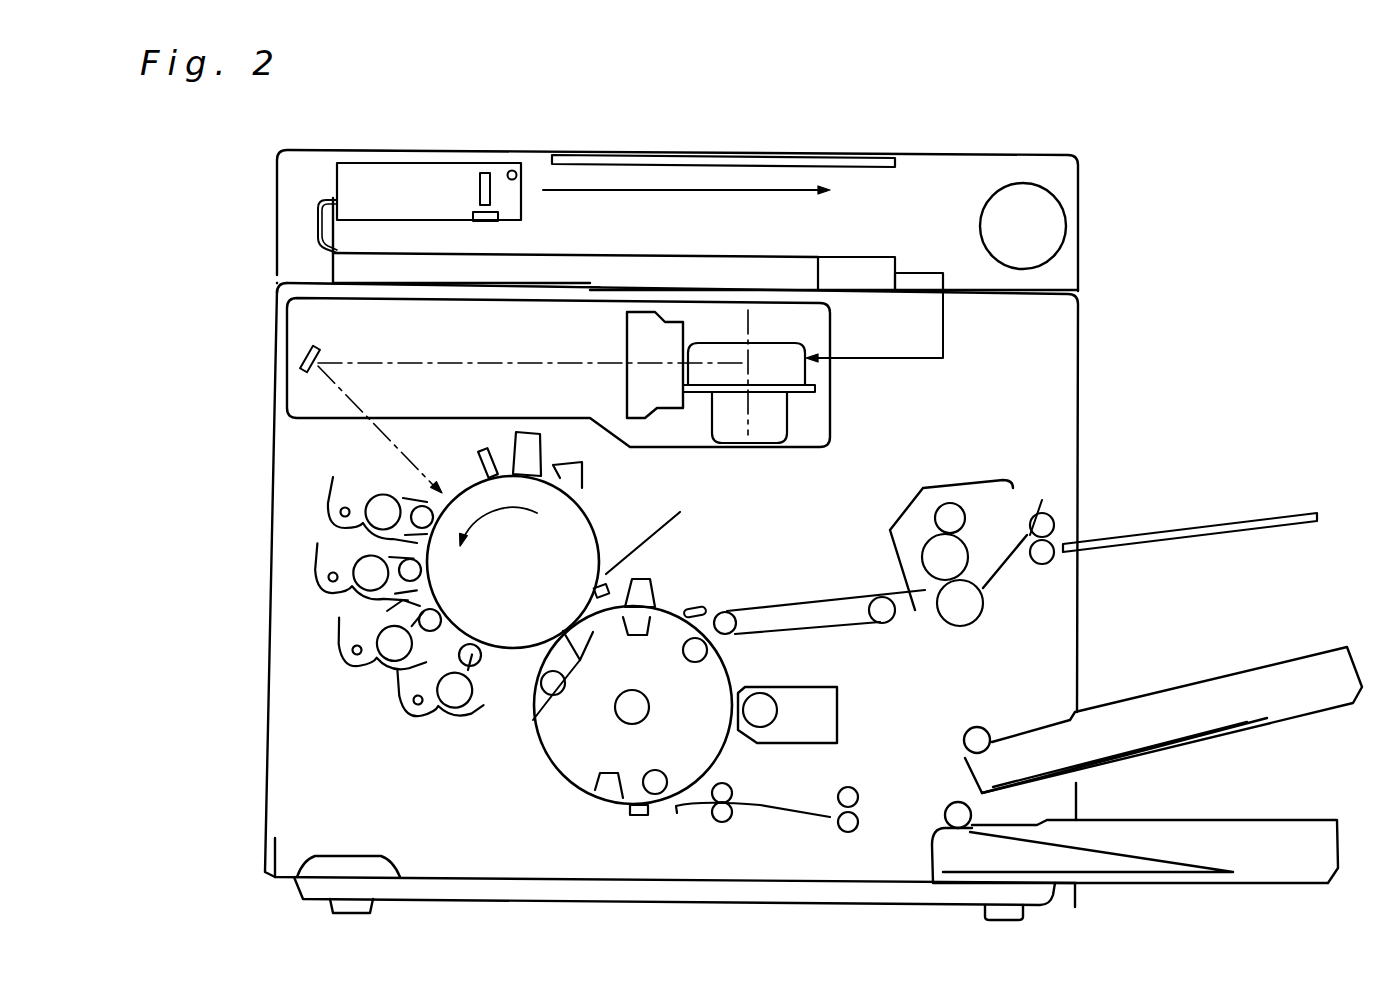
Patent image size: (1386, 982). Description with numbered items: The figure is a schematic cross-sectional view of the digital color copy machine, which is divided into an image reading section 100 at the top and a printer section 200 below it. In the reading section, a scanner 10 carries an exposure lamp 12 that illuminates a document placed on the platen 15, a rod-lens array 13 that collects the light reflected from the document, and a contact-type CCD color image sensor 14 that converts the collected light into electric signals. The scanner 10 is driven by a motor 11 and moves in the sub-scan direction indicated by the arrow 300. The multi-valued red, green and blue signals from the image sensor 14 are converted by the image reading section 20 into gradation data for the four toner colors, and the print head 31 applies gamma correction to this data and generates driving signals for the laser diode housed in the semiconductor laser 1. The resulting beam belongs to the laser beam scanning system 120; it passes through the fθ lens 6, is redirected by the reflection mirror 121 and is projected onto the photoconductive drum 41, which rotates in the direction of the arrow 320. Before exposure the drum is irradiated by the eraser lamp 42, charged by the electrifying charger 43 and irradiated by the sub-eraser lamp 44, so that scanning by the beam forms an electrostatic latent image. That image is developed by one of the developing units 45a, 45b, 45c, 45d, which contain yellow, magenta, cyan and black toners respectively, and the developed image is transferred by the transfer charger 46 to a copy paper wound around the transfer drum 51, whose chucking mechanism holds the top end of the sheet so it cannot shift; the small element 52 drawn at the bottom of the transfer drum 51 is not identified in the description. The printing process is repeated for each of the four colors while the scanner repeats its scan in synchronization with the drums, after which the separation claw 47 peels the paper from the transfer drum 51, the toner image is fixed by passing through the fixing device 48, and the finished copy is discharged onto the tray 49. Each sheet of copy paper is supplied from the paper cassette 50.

The semiconductor laser 1 is at (755, 359).
The fθ lens 6 is at (667, 388).
The scanner 10 is at (416, 152).
The motor 11 is at (1066, 225).
The exposure lamp 12 is at (514, 169).
The rod-lens array 13 is at (478, 190).
The CCD color image sensor 14 is at (490, 222).
The platen 15 is at (826, 157).
The image reading section 20 is at (345, 262).
The print head 31 is at (852, 257).
The photosensitive drum 41 is at (538, 582).
The eraser lamp 42 is at (583, 463).
The electrifying charger 43 is at (532, 433).
The sub-eraser lamp 44 is at (490, 450).
The developing unit 45a is at (327, 500).
The developing unit 45b is at (318, 572).
The developing unit 45c is at (336, 655).
The developing unit 45d is at (398, 703).
The transfer charger 46 is at (533, 720).
The separation claw 47 is at (708, 612).
The fixing device 48 is at (923, 488).
The tray 49 is at (1268, 512).
The paper cassette 50 is at (1277, 723).
The transfer drum 51 is at (557, 777).
The cleaner 52 is at (641, 816).
The image reading section 100 is at (196, 146).
The laser beam scanning system 120 is at (812, 374).
The reflection mirror 121 is at (305, 353).
The printer section 200 is at (183, 873).
The arrow 300 is at (674, 188).
The arrow 320 is at (475, 490).